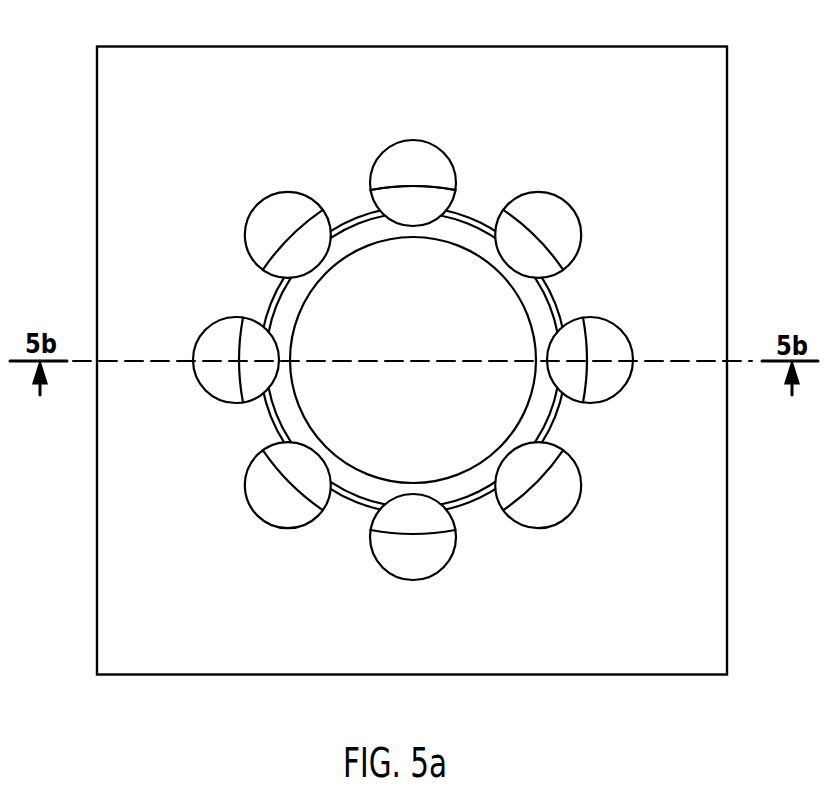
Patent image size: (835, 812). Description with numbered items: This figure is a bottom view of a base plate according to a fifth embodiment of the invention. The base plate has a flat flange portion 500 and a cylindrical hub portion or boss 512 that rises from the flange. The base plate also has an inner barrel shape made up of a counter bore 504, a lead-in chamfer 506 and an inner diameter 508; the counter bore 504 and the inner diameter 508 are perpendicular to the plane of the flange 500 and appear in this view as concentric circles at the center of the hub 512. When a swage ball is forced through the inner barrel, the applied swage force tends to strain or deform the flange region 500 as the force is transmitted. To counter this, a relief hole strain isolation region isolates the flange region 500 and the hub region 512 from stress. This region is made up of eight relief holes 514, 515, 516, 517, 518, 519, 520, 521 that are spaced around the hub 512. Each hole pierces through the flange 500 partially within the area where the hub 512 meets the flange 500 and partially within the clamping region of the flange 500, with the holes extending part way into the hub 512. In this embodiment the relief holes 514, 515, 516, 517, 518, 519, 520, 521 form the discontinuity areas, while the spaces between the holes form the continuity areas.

The flat flange portion 500 is at (602, 46).
The counter bore 504 is at (465, 218).
The lead-in chamfer 506 is at (472, 236).
The inner diameter 508 is at (528, 309).
The cylindrical hub portion 512 is at (417, 189).
The relief hole 514 is at (210, 326).
The relief hole 515 is at (258, 203).
The relief hole 516 is at (384, 152).
The relief hole 517 is at (581, 221).
The relief hole 518 is at (623, 333).
The relief hole 519 is at (571, 513).
The relief hole 520 is at (378, 563).
The relief hole 521 is at (252, 513).